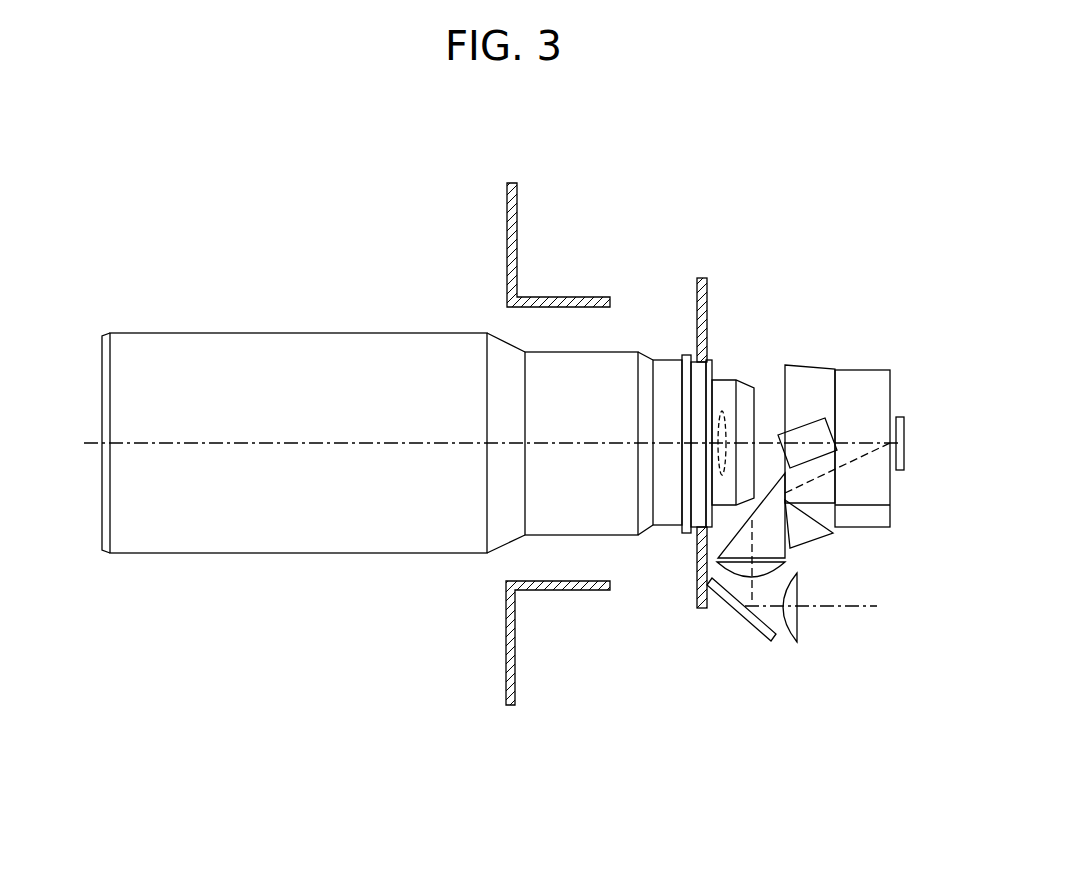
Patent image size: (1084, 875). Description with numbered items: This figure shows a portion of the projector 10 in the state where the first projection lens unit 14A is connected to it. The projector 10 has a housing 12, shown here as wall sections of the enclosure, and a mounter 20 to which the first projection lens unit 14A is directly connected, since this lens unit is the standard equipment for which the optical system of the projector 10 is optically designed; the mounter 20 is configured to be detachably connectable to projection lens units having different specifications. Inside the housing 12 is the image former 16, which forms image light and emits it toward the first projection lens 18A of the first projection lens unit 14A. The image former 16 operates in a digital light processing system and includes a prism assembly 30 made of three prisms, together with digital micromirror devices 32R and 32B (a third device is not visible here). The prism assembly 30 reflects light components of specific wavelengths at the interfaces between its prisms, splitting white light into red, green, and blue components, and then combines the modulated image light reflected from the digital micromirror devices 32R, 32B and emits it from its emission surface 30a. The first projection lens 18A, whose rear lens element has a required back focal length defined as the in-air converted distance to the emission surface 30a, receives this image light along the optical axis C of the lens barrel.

The projector 10 is at (428, 368).
The housing 12 is at (507, 199).
The first projection lens unit 14A is at (313, 404).
The image former 16 is at (823, 655).
The first projection lens 18A is at (712, 456).
The mounter 20 is at (696, 295).
The prism assembly 30 is at (832, 420).
The emission surface 30a is at (787, 403).
The digital micromirror device 32R is at (797, 435).
The digital micromirror device 32B is at (899, 472).
The optical axis C is at (487, 425).